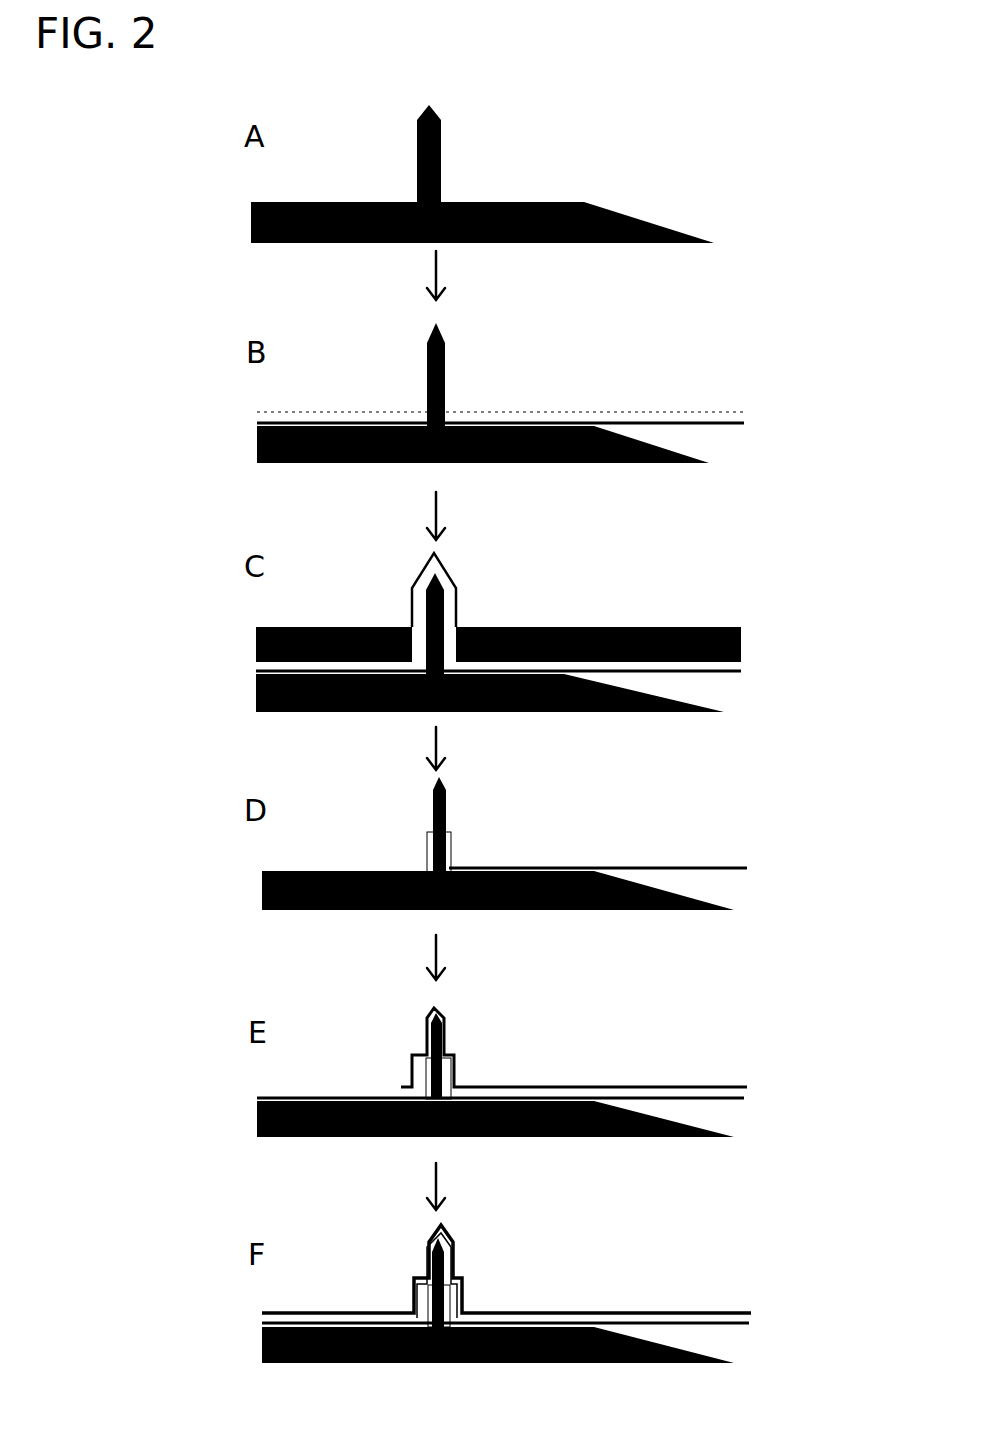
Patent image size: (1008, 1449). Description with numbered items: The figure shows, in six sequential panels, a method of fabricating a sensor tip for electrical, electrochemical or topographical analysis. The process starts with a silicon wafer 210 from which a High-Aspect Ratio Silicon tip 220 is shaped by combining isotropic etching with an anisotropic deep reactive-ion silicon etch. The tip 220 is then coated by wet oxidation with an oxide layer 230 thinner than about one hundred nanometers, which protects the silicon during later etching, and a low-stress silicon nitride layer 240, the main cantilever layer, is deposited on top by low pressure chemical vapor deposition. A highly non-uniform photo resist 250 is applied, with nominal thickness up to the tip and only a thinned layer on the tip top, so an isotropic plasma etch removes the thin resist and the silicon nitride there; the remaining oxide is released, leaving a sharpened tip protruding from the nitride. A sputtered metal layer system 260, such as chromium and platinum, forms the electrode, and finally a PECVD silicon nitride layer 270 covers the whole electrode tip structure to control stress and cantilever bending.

The silicon wafer 210 is at (740, 215).
The High-Aspect Ratio Silicon (HARS) tip 220 is at (437, 155).
The oxide layer 230 is at (685, 418).
The low-stress silicon nitride layer 240 is at (563, 407).
The photo resist 250 is at (698, 625).
The metal layer system 260 is at (683, 1082).
The PECVD silicon nitride layer 270 is at (700, 1305).